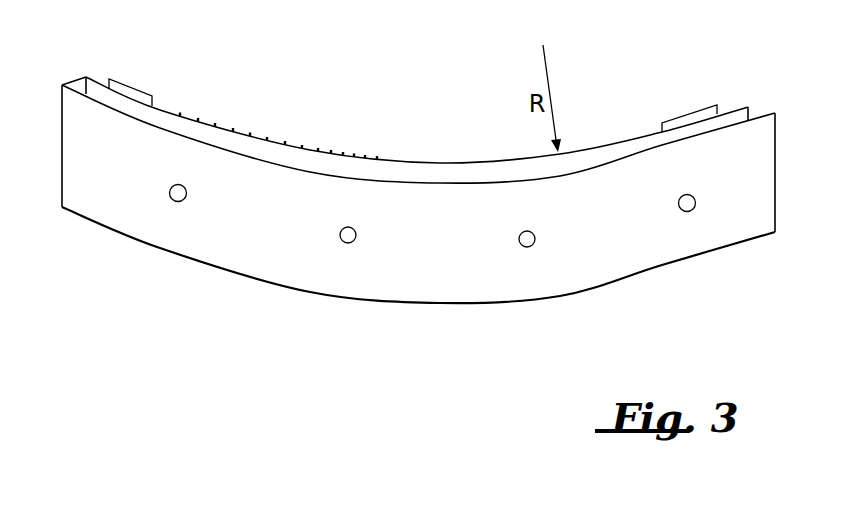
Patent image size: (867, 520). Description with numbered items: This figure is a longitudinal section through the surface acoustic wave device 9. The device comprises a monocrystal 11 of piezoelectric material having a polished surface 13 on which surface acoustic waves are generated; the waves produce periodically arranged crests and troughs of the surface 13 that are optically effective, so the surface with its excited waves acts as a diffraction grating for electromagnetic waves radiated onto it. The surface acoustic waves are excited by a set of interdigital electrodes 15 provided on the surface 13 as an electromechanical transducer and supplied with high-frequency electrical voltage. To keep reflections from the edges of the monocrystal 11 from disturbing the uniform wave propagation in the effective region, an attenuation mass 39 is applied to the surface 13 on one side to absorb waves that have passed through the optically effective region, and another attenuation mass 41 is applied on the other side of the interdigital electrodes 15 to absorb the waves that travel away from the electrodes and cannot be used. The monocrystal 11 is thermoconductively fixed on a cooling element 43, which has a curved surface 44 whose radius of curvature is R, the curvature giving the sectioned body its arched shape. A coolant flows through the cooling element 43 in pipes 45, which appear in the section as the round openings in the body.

The surface acoustic wave device 9 is at (725, 263).
The monocrystal 11 is at (748, 112).
The polished surface 13 is at (617, 142).
The interdigital electrodes 15 is at (336, 126).
The attenuation mass 39 is at (697, 117).
The attenuation mass 41 is at (140, 96).
The cooling element 43 is at (210, 252).
The curved surface 44 is at (758, 115).
The pipes 45 is at (348, 244).